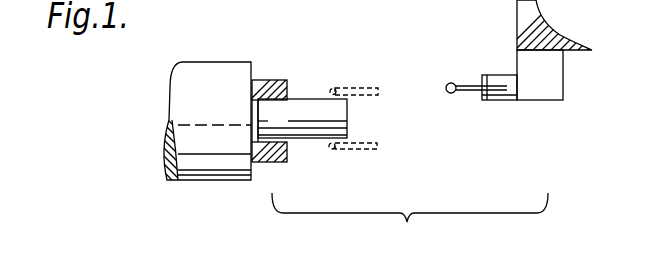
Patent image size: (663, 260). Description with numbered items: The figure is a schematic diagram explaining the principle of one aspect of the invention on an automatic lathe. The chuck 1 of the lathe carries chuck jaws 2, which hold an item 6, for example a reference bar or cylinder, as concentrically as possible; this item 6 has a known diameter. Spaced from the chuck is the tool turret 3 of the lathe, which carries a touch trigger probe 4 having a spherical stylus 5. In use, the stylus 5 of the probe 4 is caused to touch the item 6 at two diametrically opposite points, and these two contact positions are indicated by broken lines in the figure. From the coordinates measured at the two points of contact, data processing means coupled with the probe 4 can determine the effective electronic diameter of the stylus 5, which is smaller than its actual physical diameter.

The chuck 1 is at (220, 75).
The chuck jaws 2 is at (268, 78).
The tool turret 3 is at (522, 25).
The touch trigger probe 4 is at (498, 100).
The spherical stylus 5 is at (334, 87).
The reference bar or cylinder 6 is at (307, 110).